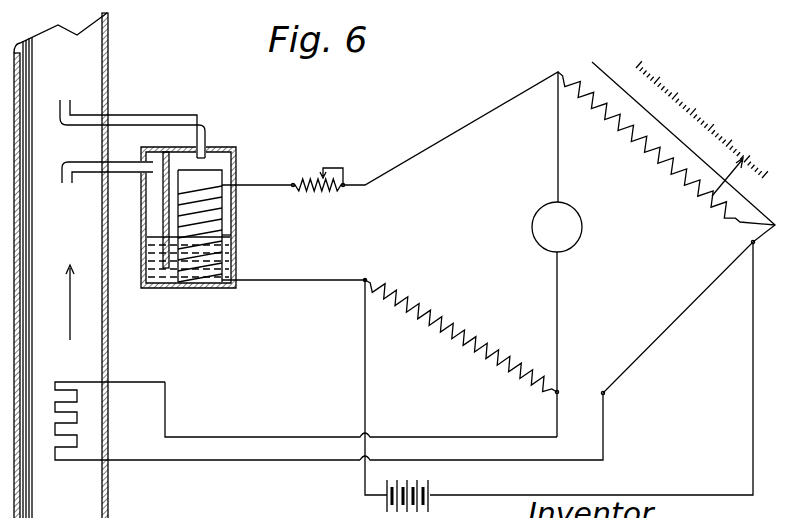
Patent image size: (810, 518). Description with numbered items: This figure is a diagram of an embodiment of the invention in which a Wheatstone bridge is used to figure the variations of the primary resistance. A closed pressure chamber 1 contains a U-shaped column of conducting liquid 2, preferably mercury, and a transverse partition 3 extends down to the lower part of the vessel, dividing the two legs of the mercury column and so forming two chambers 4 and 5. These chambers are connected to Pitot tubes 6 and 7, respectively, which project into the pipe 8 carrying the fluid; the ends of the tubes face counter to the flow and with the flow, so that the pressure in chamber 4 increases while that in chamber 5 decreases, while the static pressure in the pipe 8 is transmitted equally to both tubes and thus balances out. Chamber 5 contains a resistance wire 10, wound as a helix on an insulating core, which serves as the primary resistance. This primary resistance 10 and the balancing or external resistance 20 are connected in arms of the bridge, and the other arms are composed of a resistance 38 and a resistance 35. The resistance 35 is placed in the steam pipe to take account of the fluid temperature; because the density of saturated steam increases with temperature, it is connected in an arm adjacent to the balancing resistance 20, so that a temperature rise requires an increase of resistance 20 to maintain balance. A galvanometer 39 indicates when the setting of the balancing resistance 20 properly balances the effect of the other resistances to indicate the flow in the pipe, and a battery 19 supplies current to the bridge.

The closed pressure chamber 1 is at (213, 143).
The U-shaped column of conducting liquid 2 is at (163, 278).
The transverse partition 3 is at (147, 237).
The chamber 4 is at (152, 200).
The chamber 5 is at (235, 198).
The Pitot tube 6 is at (62, 190).
The Pitot tube 7 is at (67, 107).
The pipe 8 is at (80, 488).
The resistance wire 10 is at (233, 238).
The battery 19 is at (393, 505).
The balancing resistance 20 is at (633, 145).
The resistance 35 is at (60, 413).
The resistance 38 is at (500, 296).
The galvanometer 39 is at (578, 236).